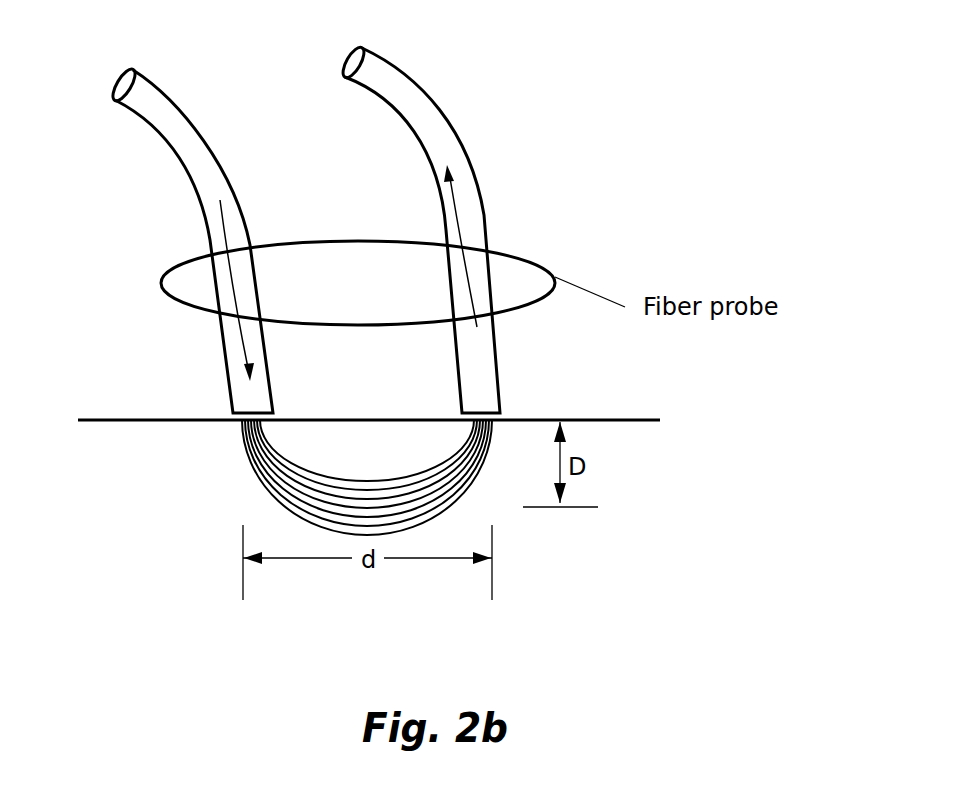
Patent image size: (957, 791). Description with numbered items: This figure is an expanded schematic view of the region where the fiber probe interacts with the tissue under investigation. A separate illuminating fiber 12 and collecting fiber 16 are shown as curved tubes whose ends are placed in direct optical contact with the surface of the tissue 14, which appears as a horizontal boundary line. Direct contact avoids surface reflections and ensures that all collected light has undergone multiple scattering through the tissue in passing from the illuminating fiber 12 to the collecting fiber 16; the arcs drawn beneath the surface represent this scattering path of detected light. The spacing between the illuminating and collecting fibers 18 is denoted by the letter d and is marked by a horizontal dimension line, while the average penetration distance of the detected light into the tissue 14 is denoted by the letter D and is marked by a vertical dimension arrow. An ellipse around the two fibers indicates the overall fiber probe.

The delivery optical fiber 12 is at (150, 128).
The collecting fibers 16 is at (452, 108).
The tissue phantom 14 is at (365, 482).
The delivery-collector fiber separation 18 is at (430, 560).